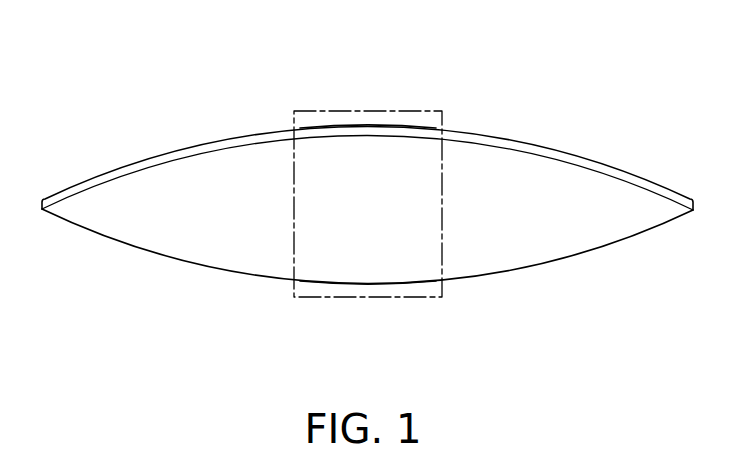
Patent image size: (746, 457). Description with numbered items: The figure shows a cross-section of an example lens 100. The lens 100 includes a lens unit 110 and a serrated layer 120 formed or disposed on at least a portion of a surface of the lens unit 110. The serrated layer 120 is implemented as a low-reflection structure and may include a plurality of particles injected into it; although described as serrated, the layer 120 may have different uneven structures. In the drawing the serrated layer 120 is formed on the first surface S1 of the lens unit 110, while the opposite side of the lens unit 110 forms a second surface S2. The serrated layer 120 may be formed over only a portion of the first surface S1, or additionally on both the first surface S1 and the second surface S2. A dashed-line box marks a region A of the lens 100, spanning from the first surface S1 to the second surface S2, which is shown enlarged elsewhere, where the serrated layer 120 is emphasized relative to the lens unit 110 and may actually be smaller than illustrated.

The lens 100 is at (250, 40).
The lens unit 110 is at (135, 237).
The serrated layer 120 is at (68, 188).
The enlarged region A is at (323, 297).
The first surface S1 is at (380, 131).
The second surface S2 is at (418, 282).